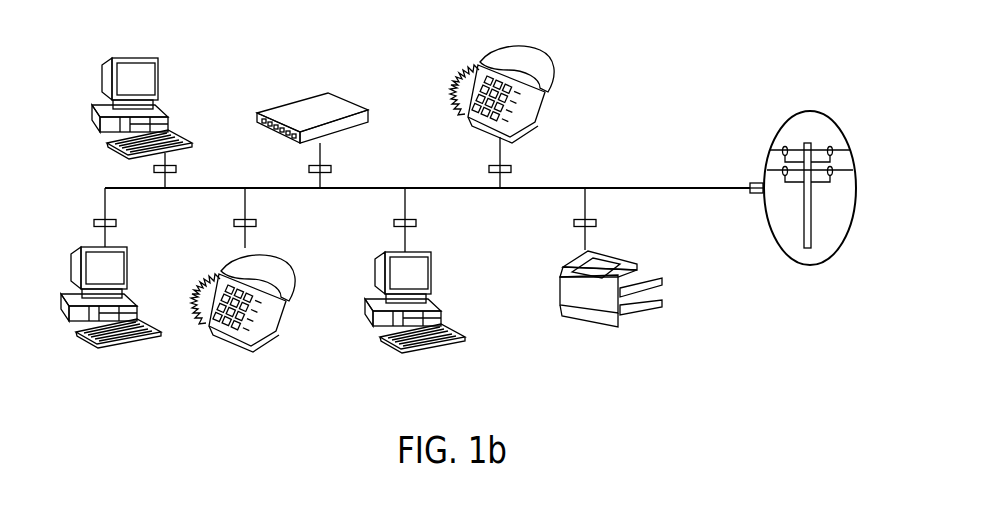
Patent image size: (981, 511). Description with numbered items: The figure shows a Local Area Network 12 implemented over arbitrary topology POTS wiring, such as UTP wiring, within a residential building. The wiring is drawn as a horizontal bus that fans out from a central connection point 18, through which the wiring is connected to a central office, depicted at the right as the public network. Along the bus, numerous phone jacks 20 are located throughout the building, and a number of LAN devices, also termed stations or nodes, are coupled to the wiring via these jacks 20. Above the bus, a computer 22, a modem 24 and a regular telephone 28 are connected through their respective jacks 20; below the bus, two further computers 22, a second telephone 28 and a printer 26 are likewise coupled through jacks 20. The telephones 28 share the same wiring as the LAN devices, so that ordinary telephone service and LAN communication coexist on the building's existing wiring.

The Local Area Network 12 is at (156, 407).
The central connection point 18 is at (750, 185).
The phone jack 20 is at (177, 169).
The computer 22 is at (140, 60).
The modem 24 is at (308, 100).
The printer 26 is at (585, 320).
The regular telephone 28 is at (535, 52).